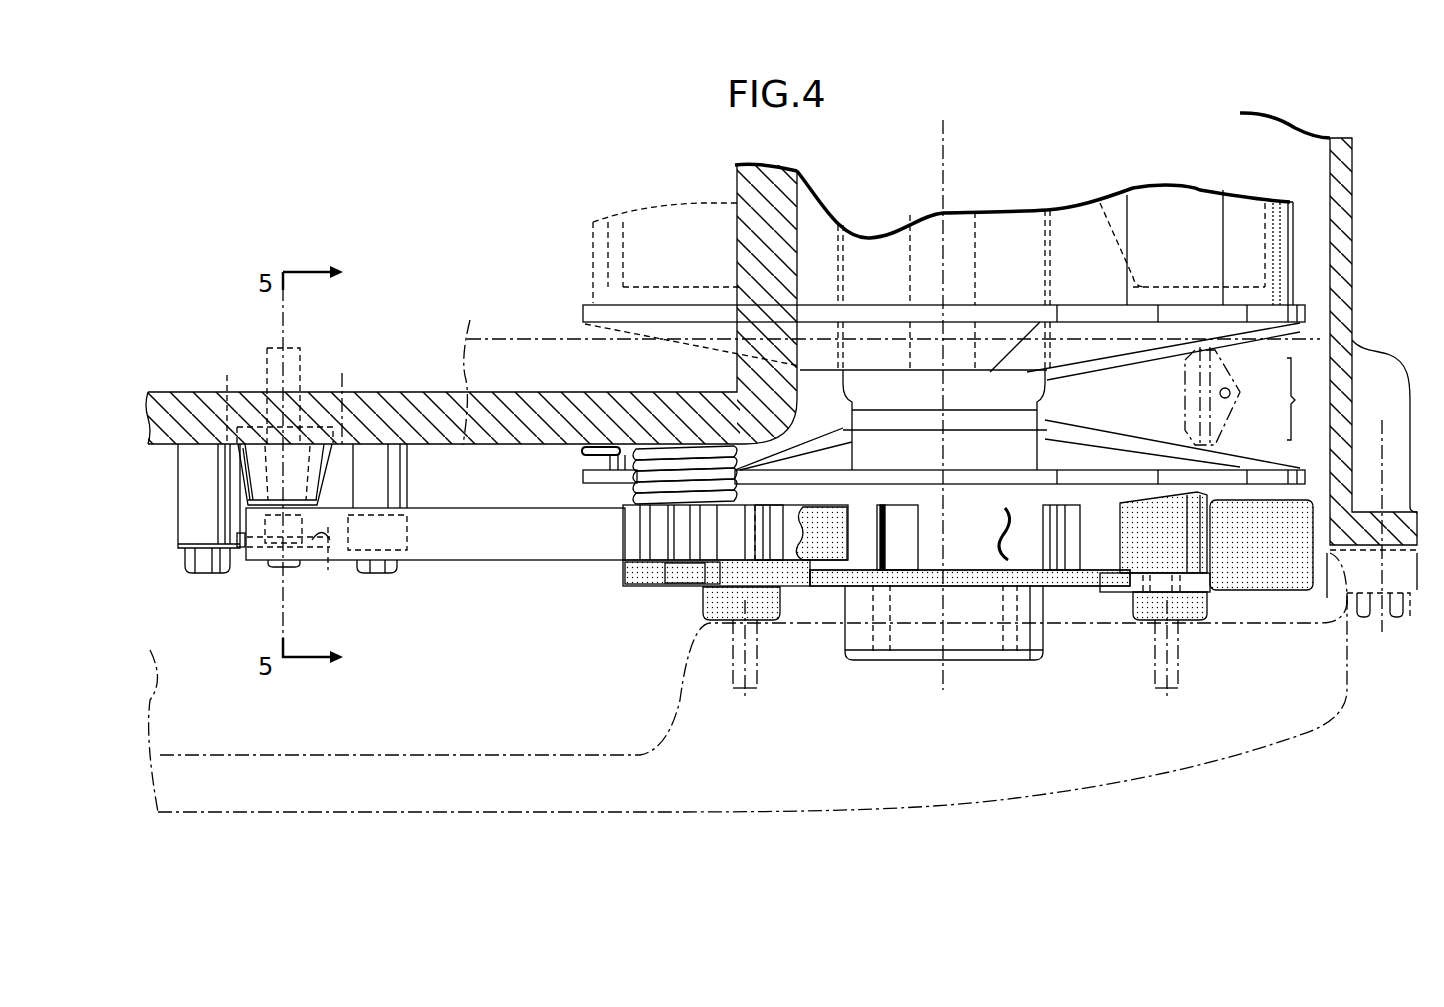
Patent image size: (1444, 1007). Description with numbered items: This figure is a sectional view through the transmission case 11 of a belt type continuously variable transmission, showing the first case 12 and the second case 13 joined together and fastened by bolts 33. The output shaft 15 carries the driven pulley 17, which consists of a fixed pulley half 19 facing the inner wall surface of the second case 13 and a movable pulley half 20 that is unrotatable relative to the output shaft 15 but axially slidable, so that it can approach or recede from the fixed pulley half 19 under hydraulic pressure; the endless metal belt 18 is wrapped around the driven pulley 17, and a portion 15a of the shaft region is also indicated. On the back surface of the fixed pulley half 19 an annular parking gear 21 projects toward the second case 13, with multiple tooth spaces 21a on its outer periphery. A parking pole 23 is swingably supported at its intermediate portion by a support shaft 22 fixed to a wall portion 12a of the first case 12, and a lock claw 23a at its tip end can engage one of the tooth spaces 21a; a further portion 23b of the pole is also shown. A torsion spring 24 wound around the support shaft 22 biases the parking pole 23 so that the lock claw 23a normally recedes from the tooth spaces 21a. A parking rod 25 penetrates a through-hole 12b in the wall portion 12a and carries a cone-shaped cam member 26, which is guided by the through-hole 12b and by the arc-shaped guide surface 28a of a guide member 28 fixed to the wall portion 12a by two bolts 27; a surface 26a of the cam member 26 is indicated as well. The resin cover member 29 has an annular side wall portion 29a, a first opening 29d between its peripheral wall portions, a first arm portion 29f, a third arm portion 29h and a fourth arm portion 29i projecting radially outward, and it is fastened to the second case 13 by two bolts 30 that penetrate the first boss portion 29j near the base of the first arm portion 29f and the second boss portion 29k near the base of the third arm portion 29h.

The transmission case 11 is at (1372, 172).
The first case 12 is at (1358, 249).
The wall portion 12a is at (468, 448).
The through-hole 12b is at (238, 383).
The second case 13 is at (1162, 778).
The output shaft 15 is at (1010, 672).
The pulley belt portion 15a is at (975, 240).
The driven pulley 17 is at (1307, 399).
The endless metal belt 18 is at (1187, 393).
The fixed pulley half 19 is at (1237, 466).
The movable pulley half 20 is at (1240, 335).
The parking gear 21 is at (960, 590).
The tooth spaces 21a is at (783, 562).
The support shaft 22 is at (680, 575).
The parking pole 23 is at (518, 566).
The lock claw 23a is at (1108, 582).
The arm hole 23b is at (328, 572).
The torsion spring 24 is at (622, 476).
The parking rod 25 is at (302, 373).
The cam member 26 is at (336, 473).
The bushing wall 26a is at (243, 485).
The bolts 27 is at (215, 575).
The guide member 28 is at (174, 531).
The guide surface 28a is at (240, 550).
The cover member 29 is at (633, 605).
The side wall portion 29a is at (845, 588).
The first opening 29d is at (852, 523).
The first arm portion 29f is at (625, 578).
The third arm portion 29h is at (1280, 585).
The fourth arm portion 29i is at (1206, 575).
The first boss portion 29j is at (702, 592).
The second boss portion 29k is at (1192, 616).
The bolts 30 is at (760, 655).
The bolts 33 is at (1390, 632).